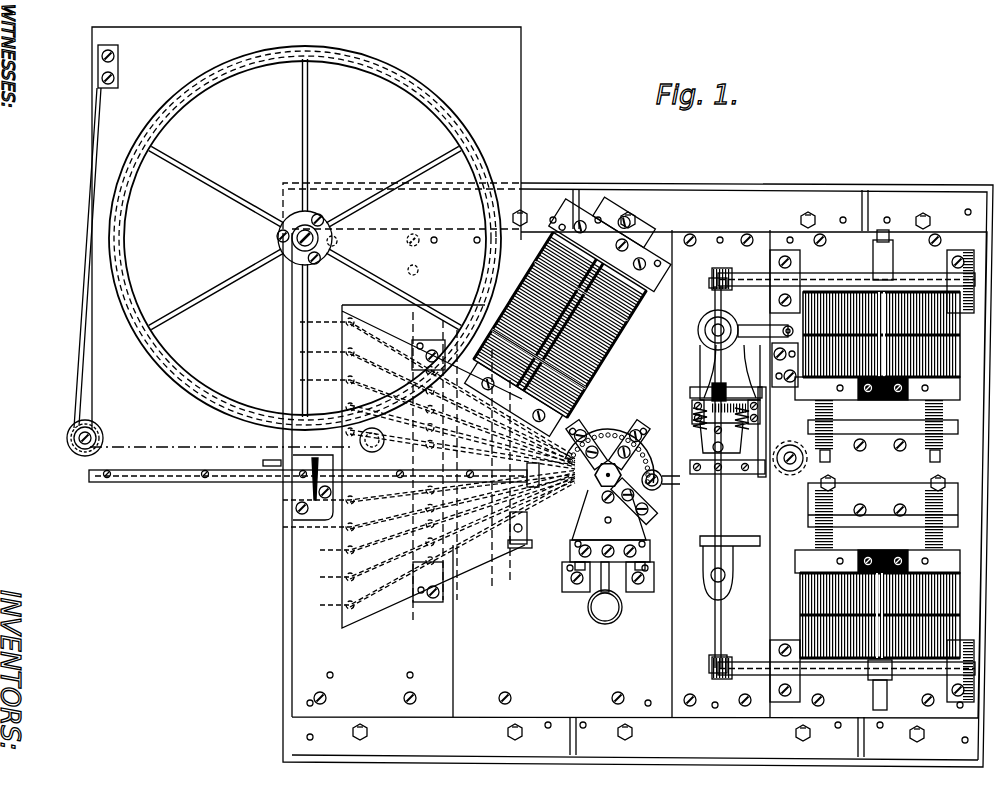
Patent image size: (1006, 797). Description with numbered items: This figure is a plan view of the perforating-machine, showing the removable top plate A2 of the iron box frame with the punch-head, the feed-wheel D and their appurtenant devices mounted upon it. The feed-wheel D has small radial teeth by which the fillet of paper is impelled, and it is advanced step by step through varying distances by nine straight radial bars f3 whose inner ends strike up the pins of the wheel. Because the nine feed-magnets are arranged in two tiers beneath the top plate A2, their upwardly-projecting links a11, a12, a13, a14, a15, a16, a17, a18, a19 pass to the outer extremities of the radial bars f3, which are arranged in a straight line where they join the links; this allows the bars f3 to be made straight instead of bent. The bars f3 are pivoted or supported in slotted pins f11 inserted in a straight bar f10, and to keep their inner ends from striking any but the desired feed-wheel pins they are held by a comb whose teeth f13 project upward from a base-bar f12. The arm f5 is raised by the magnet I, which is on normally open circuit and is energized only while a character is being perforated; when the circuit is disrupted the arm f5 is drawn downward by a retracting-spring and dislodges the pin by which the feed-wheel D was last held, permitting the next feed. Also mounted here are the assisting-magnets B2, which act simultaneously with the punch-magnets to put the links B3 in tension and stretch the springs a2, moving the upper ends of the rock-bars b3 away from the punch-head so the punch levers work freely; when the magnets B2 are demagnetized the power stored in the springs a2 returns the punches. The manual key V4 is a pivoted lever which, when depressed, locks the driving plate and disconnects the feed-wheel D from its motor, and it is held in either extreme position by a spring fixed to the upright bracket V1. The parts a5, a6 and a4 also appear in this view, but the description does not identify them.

The wheel a5 is at (245, 204).
The pulley a6 is at (775, 498).
The bar a4 is at (218, 395).
The link a11 is at (410, 382).
The link a12 is at (408, 400).
The link a13 is at (408, 416).
The link a14 is at (460, 453).
The link a15 is at (405, 495).
The link a16 is at (404, 510).
The link a17 is at (432, 520).
The link a18 is at (432, 537).
The link a19 is at (432, 553).
The radial bar f3 is at (480, 560).
The arm f5 is at (500, 432).
The straight bar f10 is at (440, 604).
The slotted pin f11 is at (410, 570).
The base-bar f12 is at (518, 550).
The comb tooth f13 is at (528, 536).
The top plate A2 is at (638, 475).
The upright bracket V1 is at (630, 590).
The manual key V4 is at (588, 592).
The magnet I is at (615, 285).
The feed-wheel D is at (622, 495).
The link B3 is at (700, 648).
The rock-bar b3 is at (770, 550).
The spring a2 is at (770, 527).
The assisting-magnet B2 is at (872, 372).